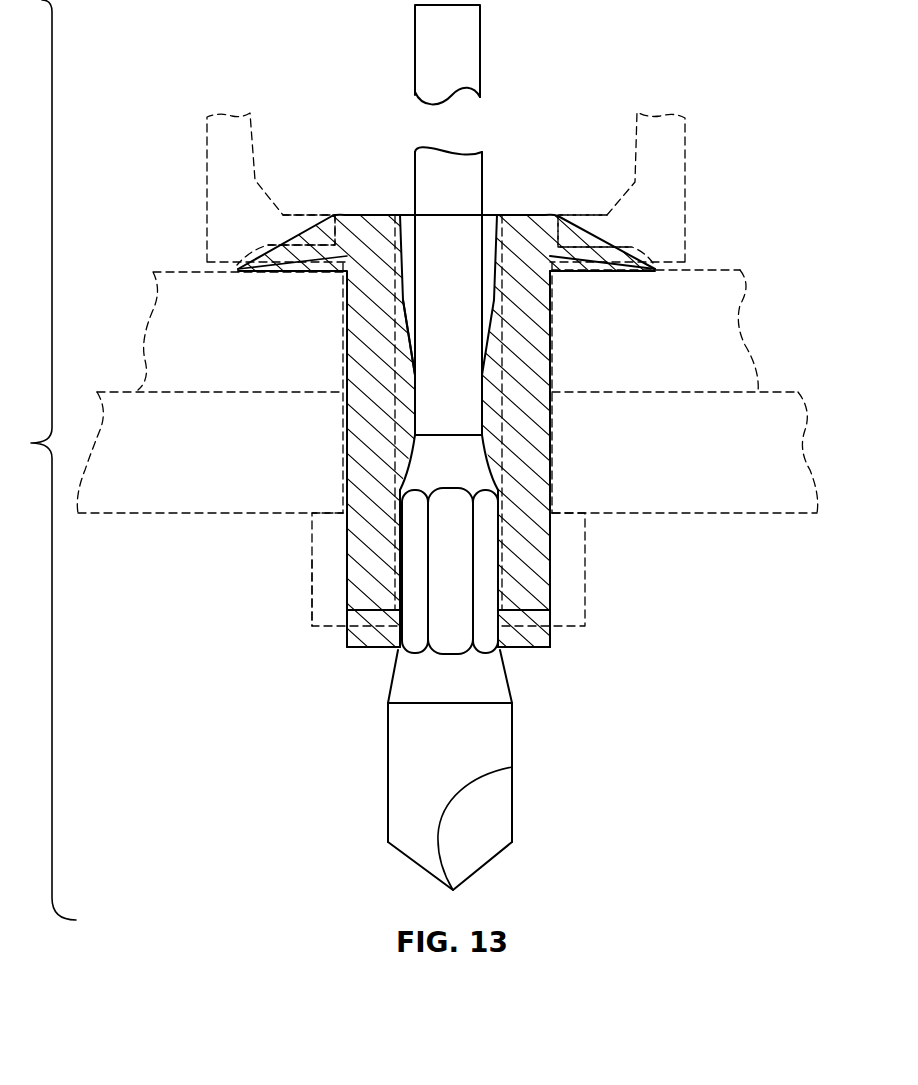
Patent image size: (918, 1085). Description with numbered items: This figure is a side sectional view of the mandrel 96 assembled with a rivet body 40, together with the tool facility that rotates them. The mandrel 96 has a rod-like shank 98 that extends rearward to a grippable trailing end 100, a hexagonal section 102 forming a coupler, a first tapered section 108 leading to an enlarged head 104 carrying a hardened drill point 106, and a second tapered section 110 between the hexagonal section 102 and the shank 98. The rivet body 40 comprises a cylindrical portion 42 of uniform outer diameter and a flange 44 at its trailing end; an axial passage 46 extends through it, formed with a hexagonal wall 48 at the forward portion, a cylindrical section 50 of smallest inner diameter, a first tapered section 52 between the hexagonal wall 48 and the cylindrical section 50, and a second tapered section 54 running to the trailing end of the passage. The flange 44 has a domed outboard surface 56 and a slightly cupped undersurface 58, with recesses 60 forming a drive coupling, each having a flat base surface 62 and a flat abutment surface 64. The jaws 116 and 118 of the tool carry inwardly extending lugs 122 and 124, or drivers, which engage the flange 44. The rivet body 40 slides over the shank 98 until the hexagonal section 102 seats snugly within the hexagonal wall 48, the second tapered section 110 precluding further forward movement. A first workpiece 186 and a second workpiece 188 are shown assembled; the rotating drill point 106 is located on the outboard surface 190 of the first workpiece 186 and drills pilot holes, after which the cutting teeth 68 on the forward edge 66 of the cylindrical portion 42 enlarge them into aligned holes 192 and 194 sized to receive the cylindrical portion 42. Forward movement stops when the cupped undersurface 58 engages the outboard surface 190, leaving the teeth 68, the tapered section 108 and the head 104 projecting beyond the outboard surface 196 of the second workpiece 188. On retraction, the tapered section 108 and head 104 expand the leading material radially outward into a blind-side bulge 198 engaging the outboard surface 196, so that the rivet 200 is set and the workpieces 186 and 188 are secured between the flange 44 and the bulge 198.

The grippable trailing end 100 is at (470, 60).
The mandrel 96 is at (472, 132).
The rod-like shank 98 is at (478, 172).
The flange 44 is at (538, 212).
The flat abutment surface 64 is at (332, 222).
The recesses 60 is at (280, 234).
The flat base surface 62 is at (285, 250).
The domed outboard surface 56 is at (642, 242).
The cupped undersurface 58 is at (612, 272).
The jaw 118 is at (206, 130).
The lug 124 is at (300, 215).
The jaw 116 is at (686, 121).
The lug 122 is at (587, 215).
The outboard surface 190 is at (718, 272).
The first workpiece 186 is at (745, 300).
The cylindrical portion 42 is at (565, 320).
The hole 192 is at (552, 348).
The rivet body 40 is at (565, 432).
The hole 194 is at (552, 470).
The second workpiece 188 is at (454, 475).
The outboard surface 196 is at (752, 514).
The blind-side bulge 198 is at (312, 528).
The rivet 200 is at (298, 562).
The axial passage 46 is at (410, 318).
The second tapered section 54 is at (412, 342).
The cylindrical section 50 is at (416, 393).
The second tapered section 110 is at (445, 442).
The first tapered section 52 is at (412, 458).
The hexagonal wall 48 is at (402, 588).
The hexagonal section 102 is at (493, 600).
The forward edge 66 is at (510, 628).
The cutting teeth 68 is at (533, 648).
The first tapered section 108 is at (398, 696).
The enlarged head 104 is at (505, 735).
The drill point 106 is at (472, 865).